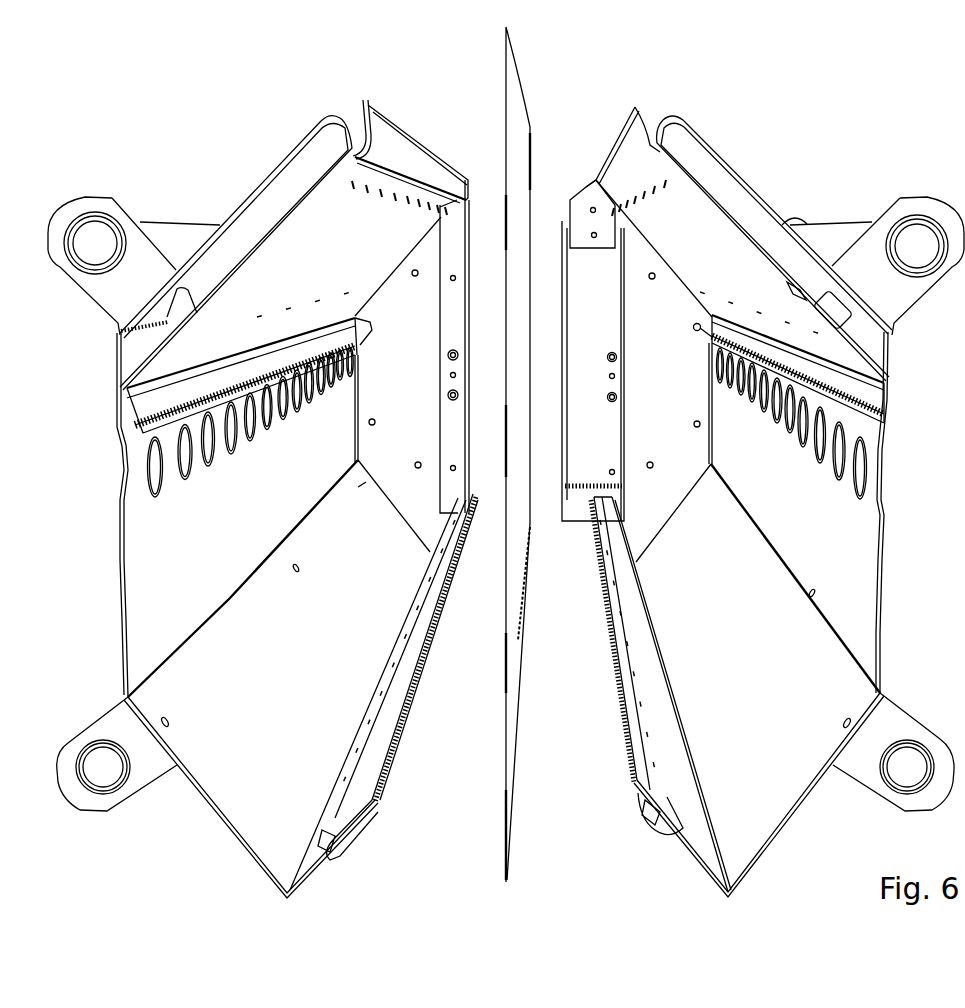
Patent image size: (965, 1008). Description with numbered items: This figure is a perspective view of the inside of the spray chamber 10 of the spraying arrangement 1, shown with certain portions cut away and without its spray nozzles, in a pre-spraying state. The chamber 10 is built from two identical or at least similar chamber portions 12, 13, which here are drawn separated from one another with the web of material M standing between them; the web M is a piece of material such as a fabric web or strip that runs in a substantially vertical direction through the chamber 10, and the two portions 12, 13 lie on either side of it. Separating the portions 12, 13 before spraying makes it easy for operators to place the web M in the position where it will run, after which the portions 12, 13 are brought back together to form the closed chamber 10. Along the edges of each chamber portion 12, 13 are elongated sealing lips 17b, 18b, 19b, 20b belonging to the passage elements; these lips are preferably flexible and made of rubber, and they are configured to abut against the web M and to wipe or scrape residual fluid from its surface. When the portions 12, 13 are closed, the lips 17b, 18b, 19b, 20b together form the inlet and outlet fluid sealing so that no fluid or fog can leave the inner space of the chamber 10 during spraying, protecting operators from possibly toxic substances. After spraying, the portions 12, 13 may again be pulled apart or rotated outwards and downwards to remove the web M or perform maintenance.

The spraying arrangement 1 is at (232, 86).
The spray chamber 10 is at (330, 116).
The chamber portion 12 is at (763, 195).
The chamber portion 13 is at (245, 194).
The elongated sealing lip 17b is at (636, 107).
The elongated sealing lip 18b is at (366, 107).
The elongated sealing lip 19b is at (630, 756).
The elongated sealing lip 20b is at (396, 726).
The web of material M is at (505, 85).